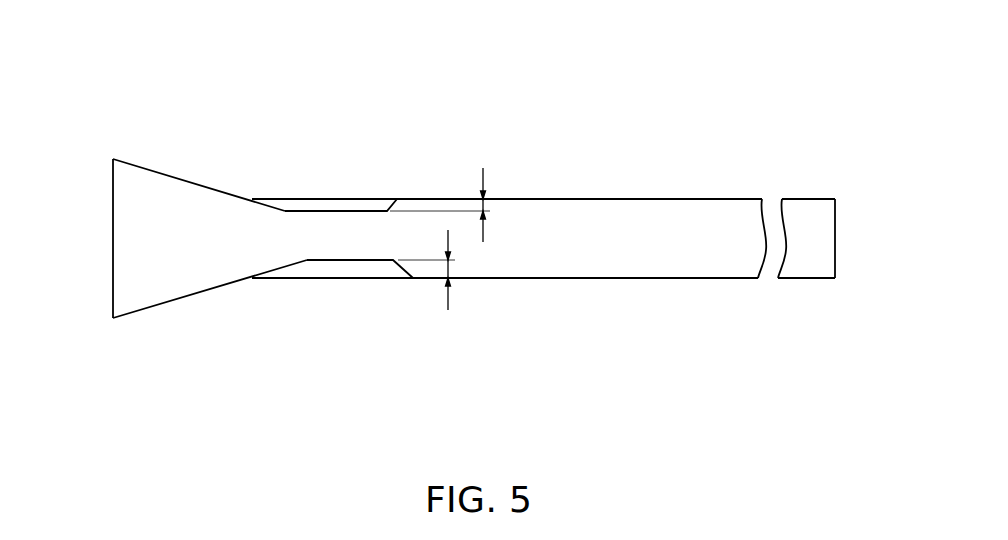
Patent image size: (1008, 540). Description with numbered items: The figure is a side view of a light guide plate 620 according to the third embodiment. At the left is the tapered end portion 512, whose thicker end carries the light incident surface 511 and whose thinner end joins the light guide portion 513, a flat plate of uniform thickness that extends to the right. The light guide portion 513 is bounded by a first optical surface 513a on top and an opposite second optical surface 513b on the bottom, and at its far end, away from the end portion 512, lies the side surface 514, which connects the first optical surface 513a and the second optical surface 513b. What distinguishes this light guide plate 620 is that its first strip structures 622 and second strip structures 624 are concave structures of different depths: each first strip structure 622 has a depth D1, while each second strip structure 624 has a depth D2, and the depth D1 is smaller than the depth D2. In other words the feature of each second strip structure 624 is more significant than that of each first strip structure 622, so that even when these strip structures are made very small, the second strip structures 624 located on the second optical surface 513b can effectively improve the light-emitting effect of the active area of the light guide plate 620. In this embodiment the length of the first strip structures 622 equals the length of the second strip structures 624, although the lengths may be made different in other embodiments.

The light guide plate 620 is at (77, 42).
The light incident surface 511 is at (113, 208).
The end portion 512 is at (147, 183).
The light guide portion 513 is at (616, 243).
The first optical surface 513a is at (660, 198).
The second optical surface 513b is at (660, 280).
The side surface 514 is at (836, 230).
The first strip structures 622 is at (338, 206).
The second strip structures 624 is at (348, 272).
The depth of first strip structure D1 is at (483, 199).
The depth of second strip structure D2 is at (448, 278).